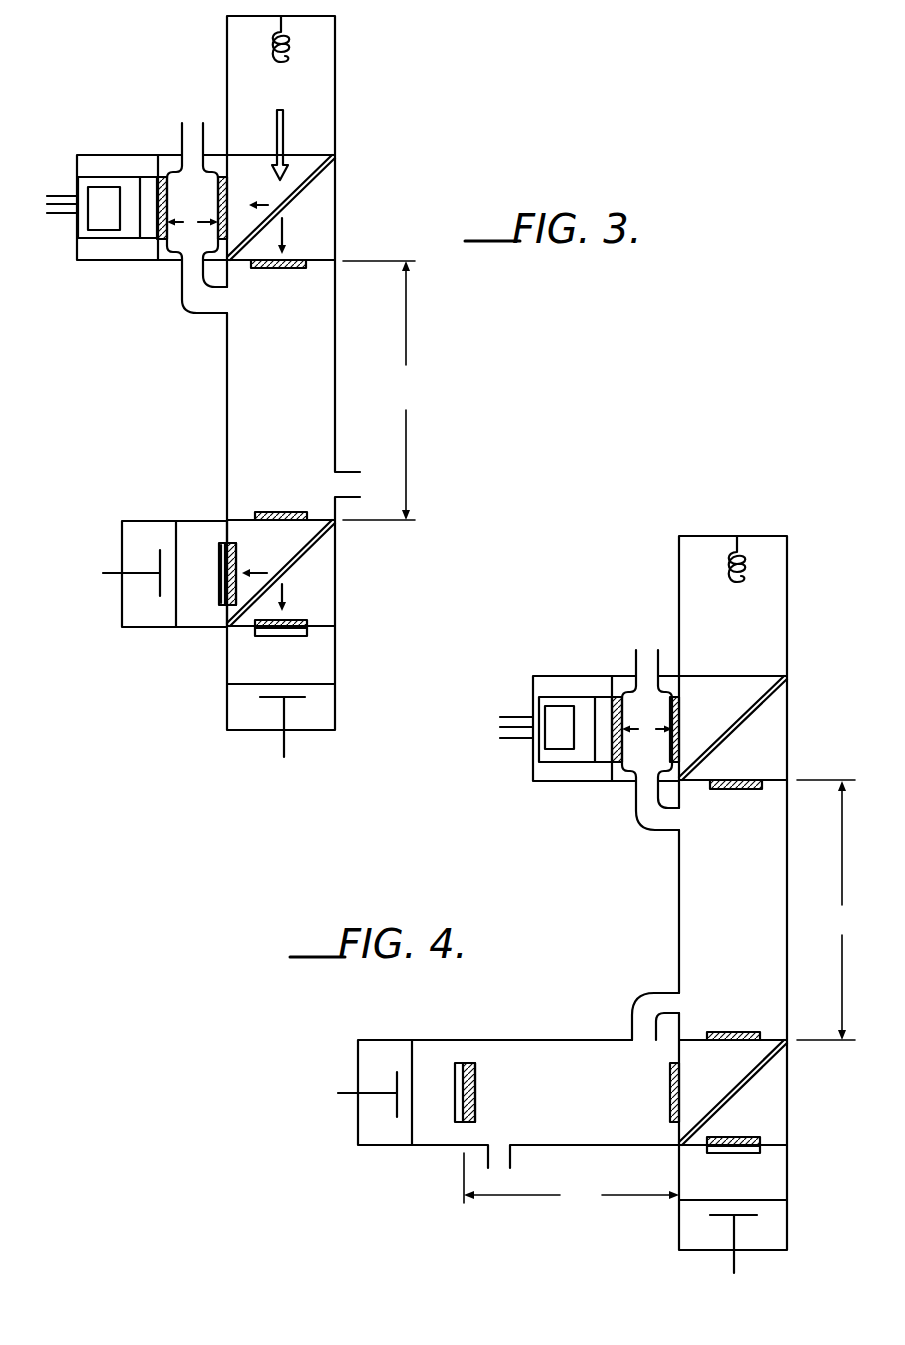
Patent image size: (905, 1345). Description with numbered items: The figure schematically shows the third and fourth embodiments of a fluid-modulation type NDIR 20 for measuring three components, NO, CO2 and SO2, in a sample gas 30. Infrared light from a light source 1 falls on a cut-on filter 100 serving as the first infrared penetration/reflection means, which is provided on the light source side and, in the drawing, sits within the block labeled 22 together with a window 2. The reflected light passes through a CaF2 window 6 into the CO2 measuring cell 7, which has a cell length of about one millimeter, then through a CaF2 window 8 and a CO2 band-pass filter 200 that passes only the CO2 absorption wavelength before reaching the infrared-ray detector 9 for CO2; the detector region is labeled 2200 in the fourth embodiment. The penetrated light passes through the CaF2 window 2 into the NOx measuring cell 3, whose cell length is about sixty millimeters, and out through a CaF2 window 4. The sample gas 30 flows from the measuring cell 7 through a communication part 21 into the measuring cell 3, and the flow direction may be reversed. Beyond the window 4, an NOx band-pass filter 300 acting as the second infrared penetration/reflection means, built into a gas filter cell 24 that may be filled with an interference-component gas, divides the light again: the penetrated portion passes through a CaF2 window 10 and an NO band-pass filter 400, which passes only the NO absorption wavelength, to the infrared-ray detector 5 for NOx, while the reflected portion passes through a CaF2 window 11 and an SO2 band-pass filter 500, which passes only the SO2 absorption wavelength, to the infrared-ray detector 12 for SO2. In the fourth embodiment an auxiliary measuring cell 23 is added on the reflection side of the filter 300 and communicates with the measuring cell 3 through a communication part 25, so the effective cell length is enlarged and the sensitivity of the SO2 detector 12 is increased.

In FIG. 3, the light source 1 is at (335, 75).
In FIG. 4, the light source 1 is at (789, 617).
In FIG. 3, the CaF2 window 2 is at (287, 268).
In FIG. 4, the CaF2 window 2 is at (736, 784).
In FIG. 3, the NOx measuring cell 3 is at (337, 355).
In FIG. 4, the NOx measuring cell 3 is at (679, 915).
In FIG. 3, the CaF2 window 4 is at (264, 512).
In FIG. 4, the CaF2 window 4 is at (733, 1036).
In FIG. 3, the infrared-ray detector for NOx 5 is at (337, 705).
In FIG. 4, the infrared-ray detector for NOx 5 is at (789, 1225).
In FIG. 3, the CaF2 window 6 is at (222, 176).
In FIG. 3, the CO2 measuring cell 7 is at (184, 192).
In FIG. 4, the CO2 measuring cell 7 is at (636, 733).
In FIG. 3, the CaF2 window 8 is at (162, 176).
In FIG. 4, the CaF2 window 8 is at (617, 729).
In FIG. 3, the infrared-ray detector for CO2 9 is at (98, 226).
In FIG. 4, the infrared-ray detector for CO2 9 is at (550, 714).
In FIG. 3, the CaF2 window 10 is at (308, 624).
In FIG. 4, the CaF2 window 10 is at (733, 1141).
In FIG. 3, the CaF2 window 11 is at (235, 543).
In FIG. 3, the infrared-ray detector for SO2 12 is at (146, 630).
In FIG. 4, the infrared-ray detector for SO2 12 is at (377, 1040).
In FIG. 3, the fluid-modulation type NDIR 20 is at (98, 120).
In FIG. 4, the fluid-modulation type NDIR 20 is at (826, 555).
In FIG. 3, the communication part 21 is at (193, 312).
In FIG. 4, the communication part 21 is at (655, 826).
In FIG. 3, the beam splitter cube 22 is at (308, 207).
In FIG. 4, the beam splitter cube 22 is at (764, 728).
In FIG. 4, the auxiliary measuring cell 23 is at (545, 1085).
In FIG. 3, the gas filter cell 24 is at (311, 573).
In FIG. 4, the gas filter cell 24 is at (763, 1079).
In FIG. 4, the communication part 25 is at (643, 1000).
In FIG. 3, the sample gas 30 is at (192, 117).
In FIG. 3, the cut-on filter 100 is at (322, 170).
In FIG. 4, the cut-on filter 100 is at (768, 700).
In FIG. 3, the CO2 band-pass filter 200 is at (150, 250).
In FIG. 3, the NOx band-pass filter 300 is at (312, 546).
In FIG. 4, the NOx band-pass filter 300 is at (763, 1073).
In FIG. 3, the NO band-pass filter 400 is at (307, 636).
In FIG. 4, the NO band-pass filter 400 is at (750, 1153).
In FIG. 3, the SO2 band-pass filter 500 is at (219, 607).
In FIG. 4, the SO2 band-pass filter 500 is at (455, 1040).
In FIG. 4, the sensor element 2200 is at (604, 696).